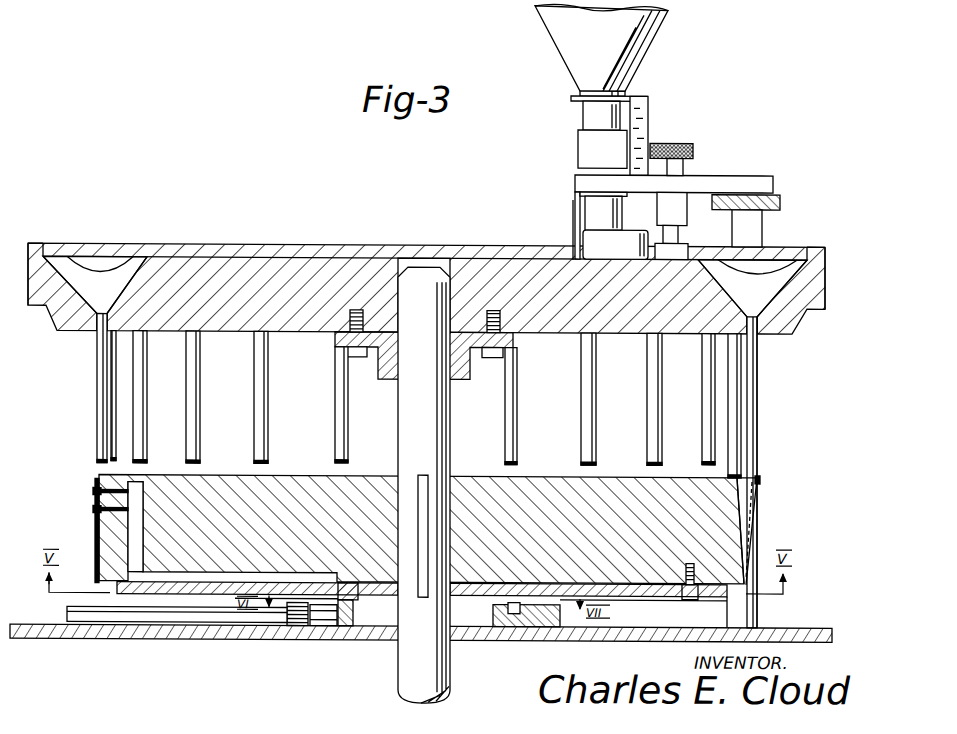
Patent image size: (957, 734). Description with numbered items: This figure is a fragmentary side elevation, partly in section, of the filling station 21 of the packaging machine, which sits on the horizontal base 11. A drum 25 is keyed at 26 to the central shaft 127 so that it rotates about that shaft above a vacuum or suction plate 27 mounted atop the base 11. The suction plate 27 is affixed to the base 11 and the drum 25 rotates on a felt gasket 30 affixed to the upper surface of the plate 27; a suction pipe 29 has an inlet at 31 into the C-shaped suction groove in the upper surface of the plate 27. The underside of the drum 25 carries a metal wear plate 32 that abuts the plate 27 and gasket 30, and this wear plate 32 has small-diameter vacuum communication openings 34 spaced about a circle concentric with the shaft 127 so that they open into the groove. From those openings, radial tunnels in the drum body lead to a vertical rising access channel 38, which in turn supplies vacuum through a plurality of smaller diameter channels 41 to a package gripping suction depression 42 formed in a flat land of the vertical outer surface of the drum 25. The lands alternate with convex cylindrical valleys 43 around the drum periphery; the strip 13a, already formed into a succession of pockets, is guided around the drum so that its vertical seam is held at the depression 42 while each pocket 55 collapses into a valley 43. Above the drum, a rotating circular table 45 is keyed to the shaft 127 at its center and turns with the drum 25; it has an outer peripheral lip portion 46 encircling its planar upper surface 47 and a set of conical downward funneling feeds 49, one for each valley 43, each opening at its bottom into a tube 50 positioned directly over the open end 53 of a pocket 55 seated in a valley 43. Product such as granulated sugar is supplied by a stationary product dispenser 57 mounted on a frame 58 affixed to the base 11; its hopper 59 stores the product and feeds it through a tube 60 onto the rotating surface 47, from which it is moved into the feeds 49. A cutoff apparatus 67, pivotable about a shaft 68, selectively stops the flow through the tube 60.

The base 11 is at (268, 627).
The strip 13a is at (96, 558).
The filling station 21 is at (268, 224).
The drum 25 is at (638, 495).
The key 26 is at (425, 505).
The suction plate 27 is at (580, 623).
The suction pipe 29 is at (135, 613).
The felt gasket 30 is at (360, 601).
The inlet 31 is at (318, 615).
The wear plate 32 is at (640, 589).
The vacuum communication openings 34 is at (351, 591).
The vertical rising access channel 38 is at (136, 510).
The smaller diameter channels 41 is at (100, 508).
The package gripping suction depression 42 is at (96, 481).
The valleys 43 is at (744, 521).
The circular table 45 is at (511, 266).
The outer peripheral lip portion 46 is at (38, 242).
The planar upper surface 47 is at (401, 230).
The funneling feeds 49 is at (56, 309).
The tube 50 is at (240, 378).
The open end 53 is at (759, 473).
The pocket 55 is at (757, 541).
The product dispenser 57 is at (652, 127).
The frame 58 is at (778, 190).
The hopper 59 is at (640, 32).
The tube 60 is at (590, 116).
The cutoff apparatus 67 is at (592, 236).
The shaft 68 is at (676, 170).
The shaft 127 is at (415, 673).